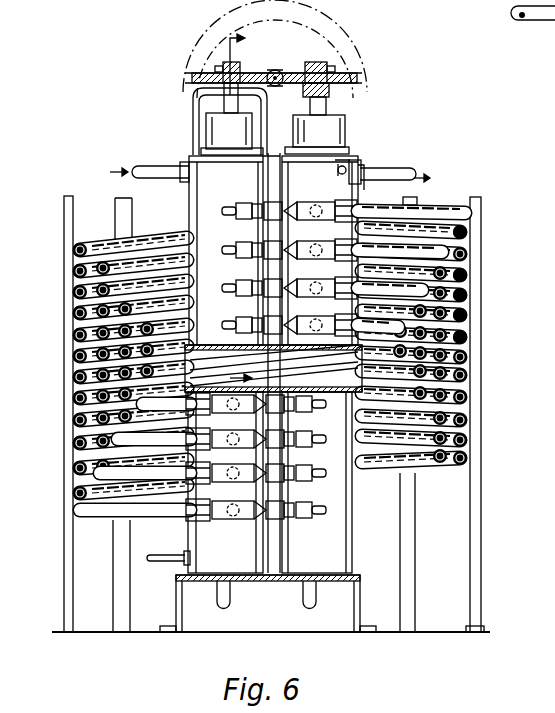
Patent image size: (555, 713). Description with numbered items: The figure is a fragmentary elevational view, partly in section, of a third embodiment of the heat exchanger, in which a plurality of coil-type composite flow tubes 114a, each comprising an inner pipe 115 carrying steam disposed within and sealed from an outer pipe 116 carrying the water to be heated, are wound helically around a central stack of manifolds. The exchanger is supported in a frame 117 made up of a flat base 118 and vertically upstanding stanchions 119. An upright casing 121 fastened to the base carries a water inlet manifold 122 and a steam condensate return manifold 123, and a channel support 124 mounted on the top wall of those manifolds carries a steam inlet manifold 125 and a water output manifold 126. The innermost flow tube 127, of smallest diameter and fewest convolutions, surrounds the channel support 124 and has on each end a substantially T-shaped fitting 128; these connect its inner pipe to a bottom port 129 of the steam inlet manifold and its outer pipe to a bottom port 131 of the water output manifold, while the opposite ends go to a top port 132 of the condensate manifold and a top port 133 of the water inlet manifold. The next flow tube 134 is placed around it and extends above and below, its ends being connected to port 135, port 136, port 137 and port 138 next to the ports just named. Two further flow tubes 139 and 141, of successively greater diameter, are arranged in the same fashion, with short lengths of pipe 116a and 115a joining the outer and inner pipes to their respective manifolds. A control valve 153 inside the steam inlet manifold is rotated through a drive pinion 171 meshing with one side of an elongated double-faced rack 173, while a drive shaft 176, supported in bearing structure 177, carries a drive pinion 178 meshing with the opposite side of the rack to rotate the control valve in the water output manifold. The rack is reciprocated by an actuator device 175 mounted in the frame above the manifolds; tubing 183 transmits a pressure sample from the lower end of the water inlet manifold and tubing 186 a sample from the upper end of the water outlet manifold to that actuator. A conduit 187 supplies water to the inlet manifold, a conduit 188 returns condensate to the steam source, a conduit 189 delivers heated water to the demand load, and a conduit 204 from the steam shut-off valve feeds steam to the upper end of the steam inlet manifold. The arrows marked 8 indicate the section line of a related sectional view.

The section line 8- 8 is at (248, 207).
The coil-type composite flow tubes 114a is at (446, 196).
The inner pipe 115 is at (467, 296).
The short length of pipe 115a is at (233, 214).
The outer pipe 116 is at (467, 316).
The short length of pipe 116a is at (216, 521).
The frame 117 is at (487, 586).
The flat base 118 is at (433, 637).
The stanchions 119 is at (410, 573).
The upright casing 121 is at (362, 600).
The water inlet manifold 122 is at (225, 482).
The steam condensate return manifold 123 is at (317, 482).
The channel support 124 is at (274, 372).
The steam inlet manifold 125 is at (234, 250).
The water output manifold 126 is at (323, 250).
The coil-type flow tube 127 is at (468, 340).
The T-shaped fitting 128 is at (254, 274).
The bottom port 129 is at (223, 327).
The bottom port 131 is at (273, 367).
The top port 132 is at (318, 417).
The top port 133 is at (231, 411).
The coil-type flow tube 134 is at (468, 278).
The port 135 is at (248, 305).
The port 136 is at (289, 260).
The port 137 is at (324, 441).
The port 138 is at (226, 448).
The flow tube 139 is at (466, 237).
The flow tube 141 is at (386, 206).
The control valve 153 is at (259, 120).
The drive pinion 171 is at (190, 73).
The double-faced rack 173 is at (278, 70).
The actuator device 175 is at (365, 56).
The drive shaft 176 is at (332, 90).
The bearing structure 177 is at (345, 112).
The drive pinion 178 is at (355, 72).
The tubing 183 is at (161, 562).
The tubing 186 is at (350, 163).
The conduit 187 is at (231, 604).
The conduit 188 is at (317, 603).
The conduit 189 is at (406, 168).
The conduit 204 is at (147, 166).